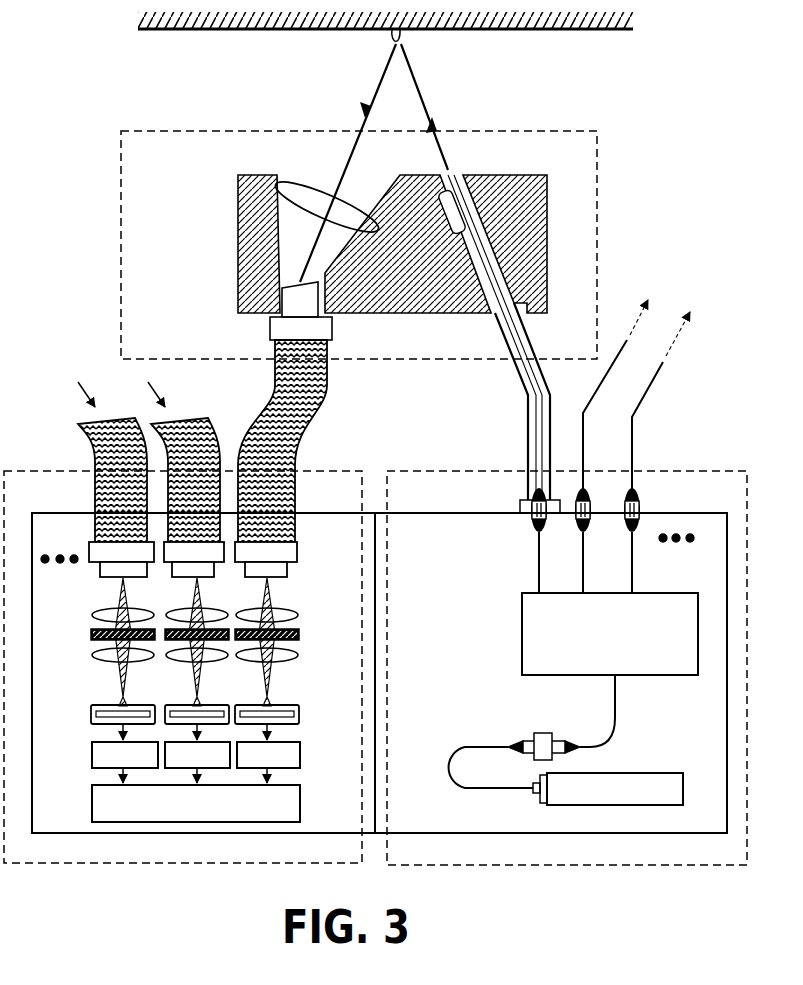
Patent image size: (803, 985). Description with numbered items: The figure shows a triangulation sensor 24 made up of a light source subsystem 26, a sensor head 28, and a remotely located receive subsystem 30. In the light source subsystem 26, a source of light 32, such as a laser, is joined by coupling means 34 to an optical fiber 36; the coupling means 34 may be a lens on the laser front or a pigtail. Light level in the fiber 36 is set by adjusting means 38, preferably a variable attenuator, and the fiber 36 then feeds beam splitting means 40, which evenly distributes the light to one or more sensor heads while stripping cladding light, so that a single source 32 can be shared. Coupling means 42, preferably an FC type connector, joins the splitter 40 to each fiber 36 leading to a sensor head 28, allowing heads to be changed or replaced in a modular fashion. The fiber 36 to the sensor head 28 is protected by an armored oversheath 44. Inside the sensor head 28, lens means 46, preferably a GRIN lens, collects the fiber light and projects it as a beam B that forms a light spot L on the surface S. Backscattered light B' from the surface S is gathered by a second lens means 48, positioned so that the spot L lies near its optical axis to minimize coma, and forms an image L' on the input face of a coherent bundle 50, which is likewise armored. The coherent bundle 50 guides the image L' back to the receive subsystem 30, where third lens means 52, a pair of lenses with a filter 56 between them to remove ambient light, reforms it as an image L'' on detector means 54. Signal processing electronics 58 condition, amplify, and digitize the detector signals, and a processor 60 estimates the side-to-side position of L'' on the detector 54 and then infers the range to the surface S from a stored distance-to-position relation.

The triangulation sensor 24 is at (47, 301).
The light source subsystem 26 is at (419, 861).
The sensor head 28 is at (158, 161).
The receive subsystem 30 is at (354, 861).
The source of light 32 is at (654, 773).
The coupling means 34 is at (536, 798).
The optical fiber 36 is at (537, 437).
The means for adjusting the level of light 38 is at (543, 733).
The beam splitting means 40 is at (522, 631).
The coupling means 42 is at (532, 520).
The armored oversheath 44 is at (527, 398).
The lens means 46 is at (466, 214).
The lens means 48 is at (300, 183).
The coherent bundle 50 is at (293, 448).
The third lens means 52 is at (298, 616).
The detector means 54 is at (300, 716).
The filter 56 is at (300, 633).
The signal processing electronics 58 is at (300, 752).
The processor 60 is at (300, 800).
The surface S is at (232, 30).
The light spot L is at (417, 47).
The beam B is at (434, 107).
The backscattered light B' is at (348, 163).
The image L' is at (301, 287).
The image L'' is at (283, 692).